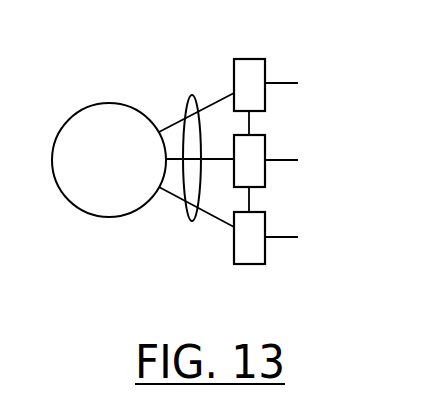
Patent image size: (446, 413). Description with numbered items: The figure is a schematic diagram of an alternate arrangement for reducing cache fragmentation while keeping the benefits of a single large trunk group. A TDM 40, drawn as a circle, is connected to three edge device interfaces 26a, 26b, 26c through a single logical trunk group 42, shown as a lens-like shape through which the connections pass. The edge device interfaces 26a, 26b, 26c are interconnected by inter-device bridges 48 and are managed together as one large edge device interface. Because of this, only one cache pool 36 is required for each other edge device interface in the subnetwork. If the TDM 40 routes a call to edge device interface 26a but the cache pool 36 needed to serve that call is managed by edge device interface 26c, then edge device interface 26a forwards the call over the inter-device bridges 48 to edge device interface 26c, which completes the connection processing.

The TDM 40 is at (105, 118).
The single logical trunk group 42 is at (187, 218).
The edge device interface 26a is at (248, 59).
The edge device interface 26b is at (267, 167).
The edge device interface 26c is at (245, 263).
The cache pool 36 is at (282, 83).
The inter-device bridges 48 is at (255, 127).